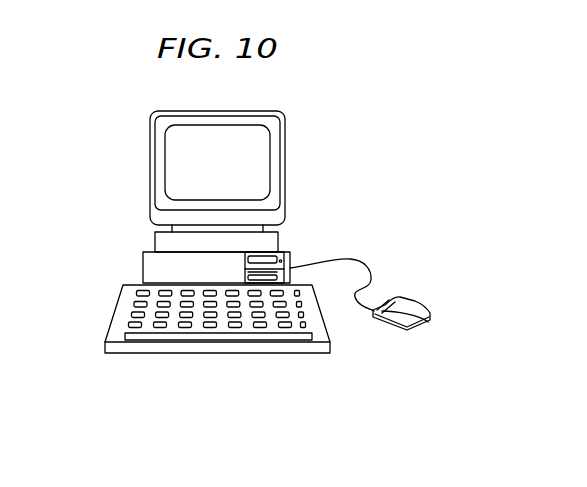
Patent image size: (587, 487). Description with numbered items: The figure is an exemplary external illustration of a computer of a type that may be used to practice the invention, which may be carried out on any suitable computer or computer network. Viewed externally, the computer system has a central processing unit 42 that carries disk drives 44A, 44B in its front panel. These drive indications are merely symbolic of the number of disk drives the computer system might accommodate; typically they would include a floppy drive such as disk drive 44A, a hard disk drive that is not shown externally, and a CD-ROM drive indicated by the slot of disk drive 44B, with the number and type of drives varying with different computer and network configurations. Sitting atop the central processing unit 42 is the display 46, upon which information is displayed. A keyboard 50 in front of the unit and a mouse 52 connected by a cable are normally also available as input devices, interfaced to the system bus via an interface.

The display 46 is at (285, 158).
The central processing unit 42 is at (143, 260).
The disk drive 44A is at (288, 253).
The disk drive 44B is at (245, 273).
The keyboard 50 is at (108, 325).
The mouse 52 is at (428, 307).